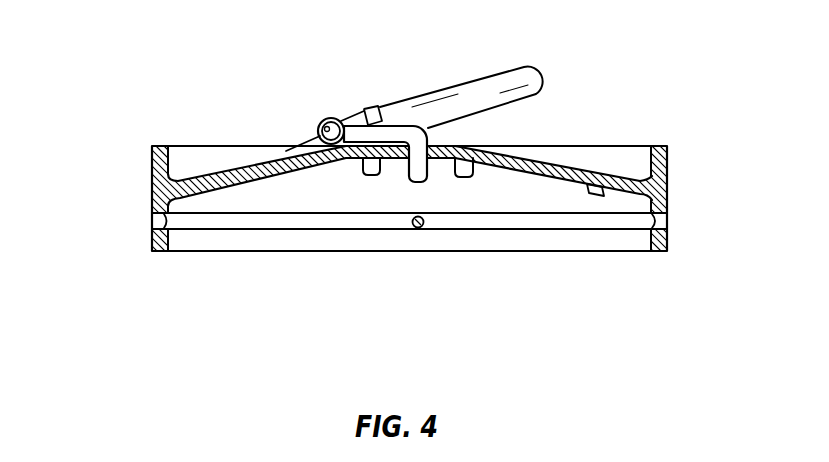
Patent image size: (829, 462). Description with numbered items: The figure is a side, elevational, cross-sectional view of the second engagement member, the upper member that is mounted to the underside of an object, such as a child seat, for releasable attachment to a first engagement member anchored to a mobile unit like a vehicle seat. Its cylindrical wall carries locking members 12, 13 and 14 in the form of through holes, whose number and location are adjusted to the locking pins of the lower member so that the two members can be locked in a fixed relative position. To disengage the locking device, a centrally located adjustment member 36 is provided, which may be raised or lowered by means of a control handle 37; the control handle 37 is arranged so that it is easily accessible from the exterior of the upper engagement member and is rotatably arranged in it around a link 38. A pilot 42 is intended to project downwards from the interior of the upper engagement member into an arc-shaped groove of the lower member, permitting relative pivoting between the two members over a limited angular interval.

The locking member 12 is at (668, 220).
The locking member 13 is at (422, 227).
The locking member 14 is at (152, 218).
The adjustment member 36 is at (416, 171).
The control handle 37 is at (517, 82).
The link 38 is at (318, 125).
The pilot 42 is at (603, 197).